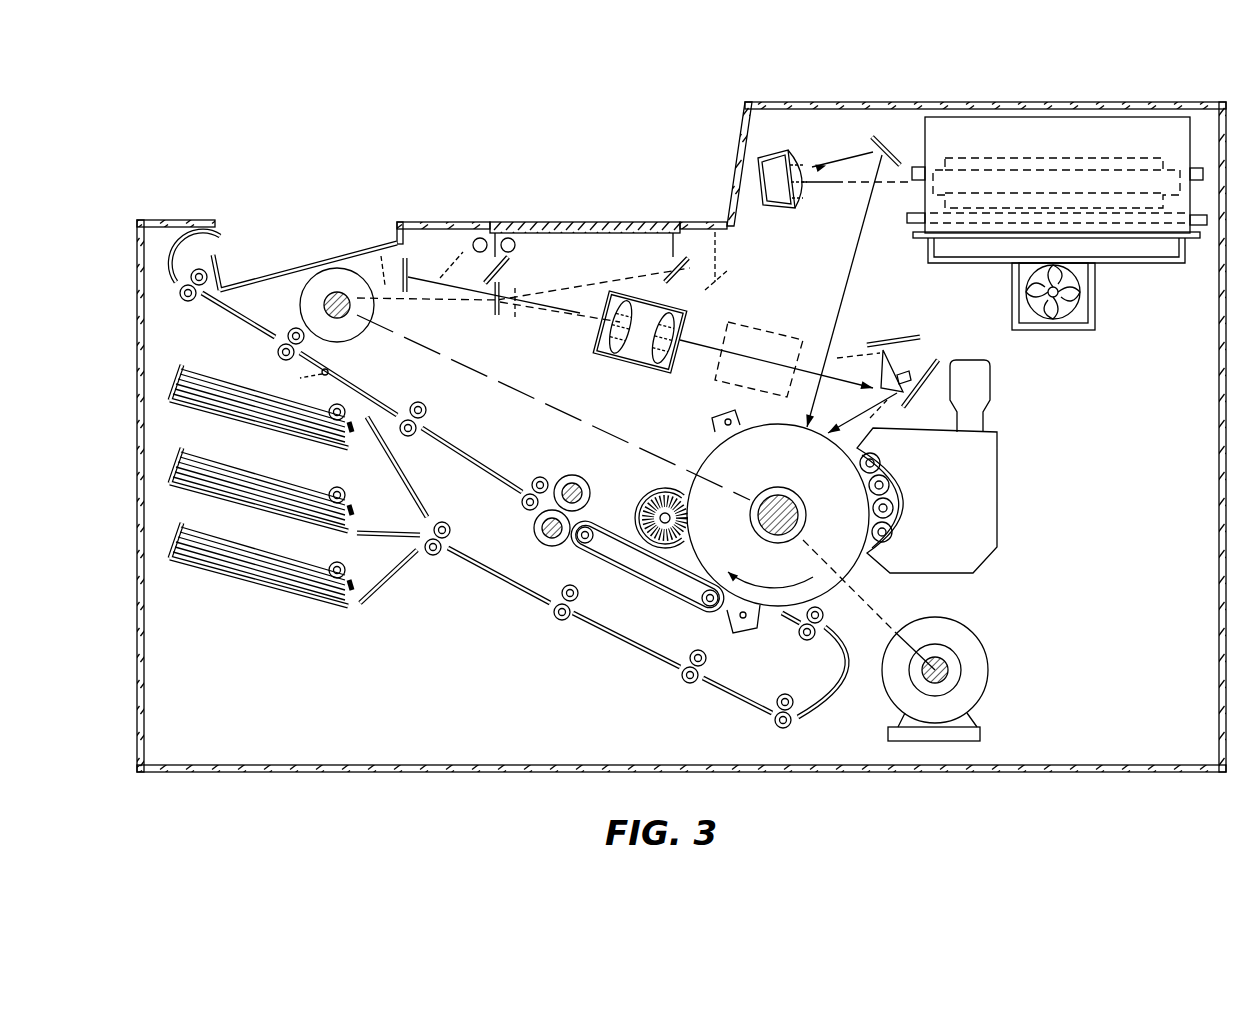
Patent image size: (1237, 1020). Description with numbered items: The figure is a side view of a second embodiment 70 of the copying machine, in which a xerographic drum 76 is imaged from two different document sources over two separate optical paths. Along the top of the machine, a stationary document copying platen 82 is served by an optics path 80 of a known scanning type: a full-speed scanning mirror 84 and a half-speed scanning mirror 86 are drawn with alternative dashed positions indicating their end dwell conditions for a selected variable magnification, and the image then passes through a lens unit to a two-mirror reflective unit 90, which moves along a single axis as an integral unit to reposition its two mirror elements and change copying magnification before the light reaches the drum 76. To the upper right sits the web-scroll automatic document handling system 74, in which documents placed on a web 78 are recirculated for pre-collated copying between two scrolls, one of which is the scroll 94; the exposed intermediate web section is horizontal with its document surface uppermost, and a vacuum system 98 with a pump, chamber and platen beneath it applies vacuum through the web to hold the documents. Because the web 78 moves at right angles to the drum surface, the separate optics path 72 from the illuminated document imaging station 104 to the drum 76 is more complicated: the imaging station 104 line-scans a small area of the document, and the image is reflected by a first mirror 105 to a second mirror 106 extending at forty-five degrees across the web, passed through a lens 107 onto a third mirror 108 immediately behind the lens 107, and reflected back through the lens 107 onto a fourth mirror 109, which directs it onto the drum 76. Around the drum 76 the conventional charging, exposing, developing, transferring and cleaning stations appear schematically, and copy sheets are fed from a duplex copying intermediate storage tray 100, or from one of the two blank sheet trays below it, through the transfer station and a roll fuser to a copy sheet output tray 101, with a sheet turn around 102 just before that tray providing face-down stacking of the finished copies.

The embodiment 70 is at (723, 113).
The optics path 72 is at (870, 203).
The web-scroll automatic document handling system 74 is at (1007, 127).
The xerographic drum 76 is at (703, 467).
The web 78 is at (940, 152).
The optics path 80 is at (540, 312).
The stationary document copying platen 82 is at (548, 220).
The full-speed scanning mirror 84 is at (668, 266).
The half-speed scanning mirror 86 is at (492, 300).
The two-mirror reflective unit 90 is at (932, 337).
The scroll 94 is at (1060, 133).
The vacuum system 98 is at (1108, 287).
The duplex copying intermediate storage tray 100 is at (230, 422).
The copy sheet output tray 101 is at (342, 250).
The sheet turn around 102 is at (222, 240).
The illuminated document imaging station 104 is at (908, 227).
The first mirror 105 is at (967, 175).
The second mirror 106 is at (1090, 162).
The lens 107 is at (797, 157).
The third mirror 108 is at (757, 198).
The fourth mirror 109 is at (877, 143).